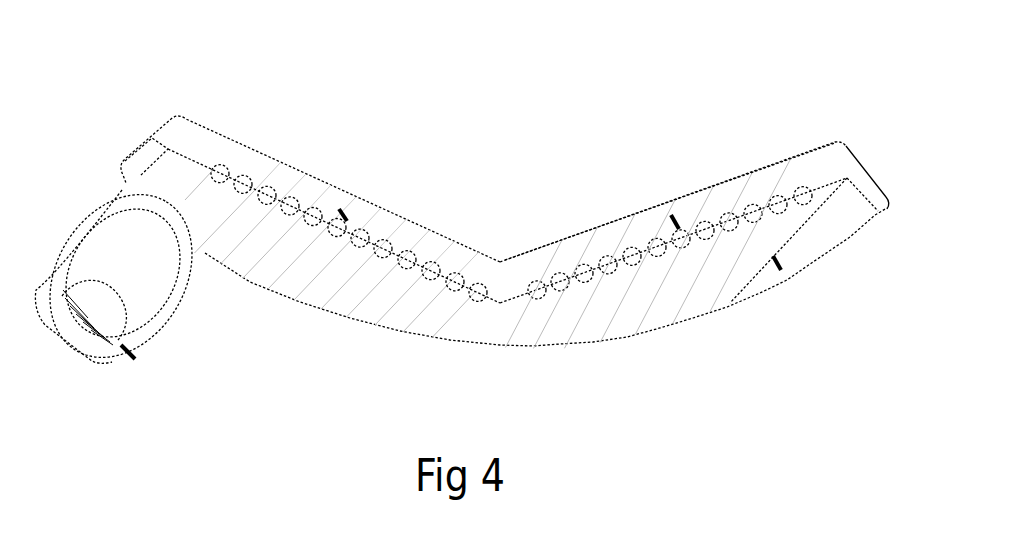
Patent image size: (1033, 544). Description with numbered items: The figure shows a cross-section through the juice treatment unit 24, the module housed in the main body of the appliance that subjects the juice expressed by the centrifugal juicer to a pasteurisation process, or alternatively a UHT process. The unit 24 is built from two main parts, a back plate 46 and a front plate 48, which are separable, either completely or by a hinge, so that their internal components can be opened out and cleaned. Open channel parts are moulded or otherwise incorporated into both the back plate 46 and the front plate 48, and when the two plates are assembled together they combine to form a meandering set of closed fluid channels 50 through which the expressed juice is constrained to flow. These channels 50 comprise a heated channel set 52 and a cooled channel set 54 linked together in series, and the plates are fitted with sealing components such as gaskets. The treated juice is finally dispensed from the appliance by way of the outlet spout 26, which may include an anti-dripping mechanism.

The juice treatment unit 24 is at (562, 365).
The outlet spout 26 is at (134, 356).
The back plate 46 is at (707, 201).
The front plate 48 is at (777, 263).
The fluid channels 50 is at (762, 192).
The heated channel set 52 is at (675, 222).
The cooled channel set 54 is at (343, 215).